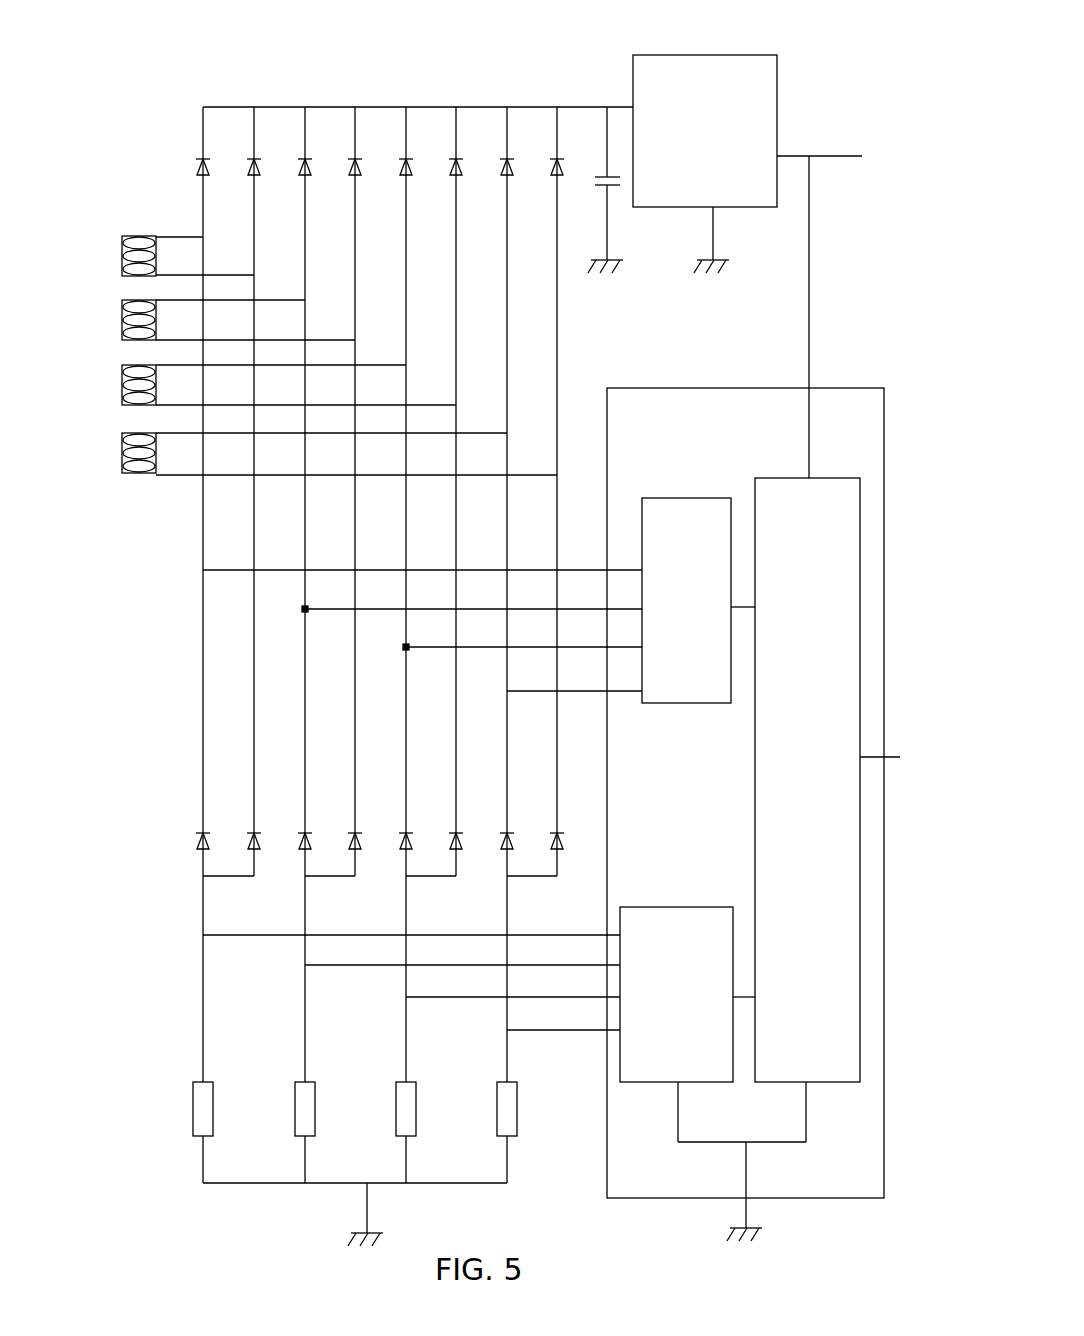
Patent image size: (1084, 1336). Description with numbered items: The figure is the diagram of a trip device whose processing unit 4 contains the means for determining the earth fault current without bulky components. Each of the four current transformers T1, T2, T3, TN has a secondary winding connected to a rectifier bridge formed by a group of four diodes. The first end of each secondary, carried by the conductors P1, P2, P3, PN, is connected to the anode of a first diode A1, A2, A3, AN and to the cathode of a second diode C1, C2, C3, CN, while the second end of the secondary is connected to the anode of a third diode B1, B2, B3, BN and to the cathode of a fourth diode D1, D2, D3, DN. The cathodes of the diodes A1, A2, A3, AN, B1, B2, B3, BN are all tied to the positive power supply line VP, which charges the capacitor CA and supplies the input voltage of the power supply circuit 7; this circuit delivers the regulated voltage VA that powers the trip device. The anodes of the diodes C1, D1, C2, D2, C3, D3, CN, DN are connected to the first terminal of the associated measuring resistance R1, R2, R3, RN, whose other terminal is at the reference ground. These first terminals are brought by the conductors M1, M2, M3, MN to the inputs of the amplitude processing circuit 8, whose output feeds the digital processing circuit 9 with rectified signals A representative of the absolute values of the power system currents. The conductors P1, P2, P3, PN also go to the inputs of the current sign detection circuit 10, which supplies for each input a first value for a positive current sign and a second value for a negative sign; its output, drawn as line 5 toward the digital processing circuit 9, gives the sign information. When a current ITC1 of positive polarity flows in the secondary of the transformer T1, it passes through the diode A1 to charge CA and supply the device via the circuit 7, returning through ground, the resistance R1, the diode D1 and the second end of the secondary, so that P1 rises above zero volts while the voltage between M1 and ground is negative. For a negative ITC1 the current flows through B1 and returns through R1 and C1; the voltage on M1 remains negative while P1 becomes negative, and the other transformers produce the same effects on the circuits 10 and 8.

The power supply circuit 7 is at (728, 55).
The processing unit 4 is at (728, 387).
The current sign detection circuit 10 is at (690, 703).
The digital processing circuit 9 is at (755, 751).
The amplitude processing circuit 8 is at (678, 906).
The sign output line 5 is at (745, 607).
The rectified signals A is at (749, 996).
The positive power supply line VP is at (594, 106).
The regulated voltage VA is at (809, 274).
The capacitor CA is at (605, 171).
The current transformer TN is at (122, 259).
The current transformer T1 is at (122, 326).
The current transformer T2 is at (122, 388).
The current transformer T3 is at (122, 464).
The current ITC1 is at (185, 297).
The first diode AN is at (198, 178).
The third diode BN is at (249, 178).
The first diode A1 is at (300, 178).
The third diode B1 is at (350, 178).
The first diode A2 is at (401, 178).
The third diode B2 is at (452, 178).
The first diode A3 is at (502, 178).
The third diode B3 is at (553, 178).
The conductor PN is at (590, 568).
The conductor P1 is at (591, 607).
The conductor P2 is at (594, 645).
The conductor P3 is at (594, 689).
The second diode CN is at (198, 843).
The fourth diode DN is at (247, 843).
The second diode C1 is at (299, 843).
The fourth diode D1 is at (349, 843).
The second diode C2 is at (400, 843).
The fourth diode D2 is at (451, 843).
The second diode C3 is at (501, 843).
The fourth diode D3 is at (552, 843).
The conductor MN is at (582, 934).
The conductor M1 is at (582, 964).
The conductor M2 is at (586, 996).
The conductor M3 is at (587, 1029).
The measuring resistance RN is at (193, 1117).
The measuring resistance R1 is at (295, 1120).
The measuring resistance R2 is at (396, 1120).
The measuring resistance R3 is at (497, 1120).